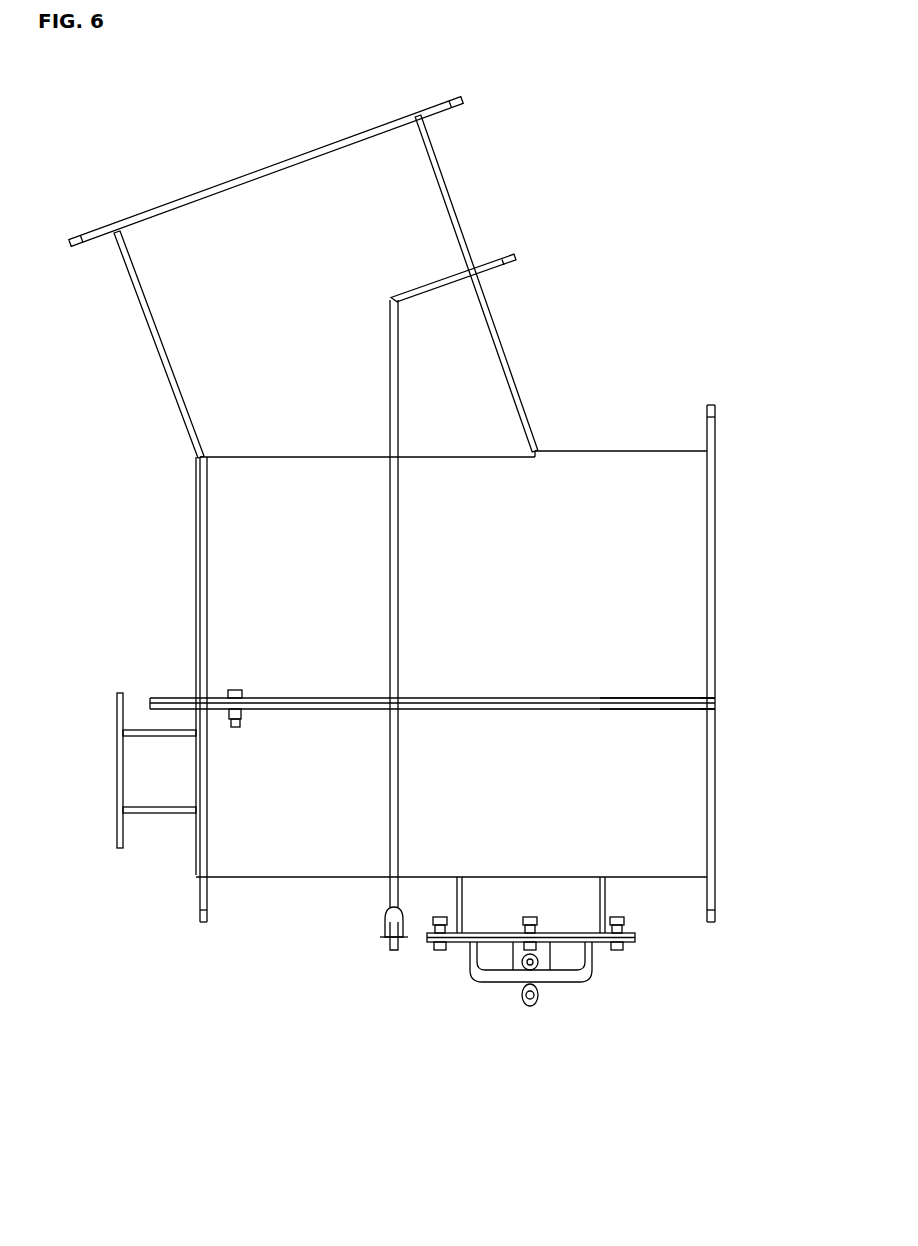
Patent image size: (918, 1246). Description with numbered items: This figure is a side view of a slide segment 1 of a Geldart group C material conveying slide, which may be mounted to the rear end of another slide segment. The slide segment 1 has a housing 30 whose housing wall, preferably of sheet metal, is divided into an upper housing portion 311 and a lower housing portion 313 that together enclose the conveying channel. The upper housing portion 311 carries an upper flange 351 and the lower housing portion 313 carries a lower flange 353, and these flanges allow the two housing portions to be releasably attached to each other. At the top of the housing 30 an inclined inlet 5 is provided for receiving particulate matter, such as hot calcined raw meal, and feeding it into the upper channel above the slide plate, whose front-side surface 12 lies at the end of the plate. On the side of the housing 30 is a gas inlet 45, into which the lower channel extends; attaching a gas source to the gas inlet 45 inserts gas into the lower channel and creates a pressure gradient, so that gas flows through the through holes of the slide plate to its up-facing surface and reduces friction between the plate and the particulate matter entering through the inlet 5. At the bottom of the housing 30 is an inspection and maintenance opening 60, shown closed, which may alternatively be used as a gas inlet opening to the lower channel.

The slide segment 1 is at (640, 228).
The inlet 5 is at (172, 198).
The housing 30 is at (626, 448).
The upper housing portion 311 is at (677, 590).
The lower housing portion 313 is at (326, 843).
The upper flange 351 is at (262, 700).
The lower flange 353 is at (652, 707).
The front-side surface 12 is at (720, 713).
The gas inlet 45 is at (106, 781).
The inspection and maintenance opening 60 is at (478, 920).